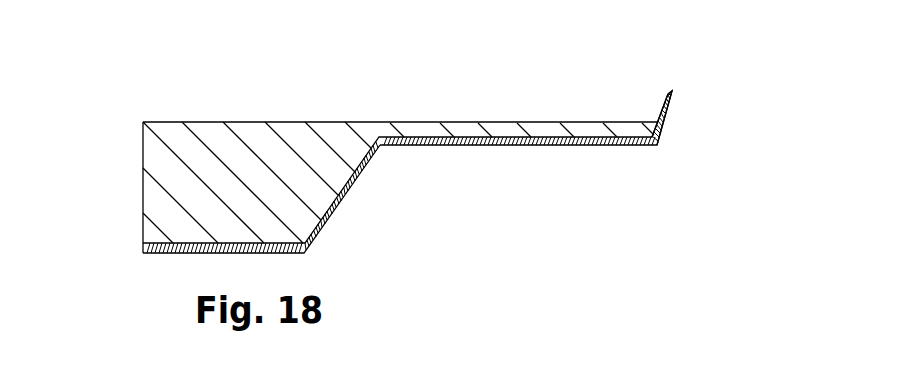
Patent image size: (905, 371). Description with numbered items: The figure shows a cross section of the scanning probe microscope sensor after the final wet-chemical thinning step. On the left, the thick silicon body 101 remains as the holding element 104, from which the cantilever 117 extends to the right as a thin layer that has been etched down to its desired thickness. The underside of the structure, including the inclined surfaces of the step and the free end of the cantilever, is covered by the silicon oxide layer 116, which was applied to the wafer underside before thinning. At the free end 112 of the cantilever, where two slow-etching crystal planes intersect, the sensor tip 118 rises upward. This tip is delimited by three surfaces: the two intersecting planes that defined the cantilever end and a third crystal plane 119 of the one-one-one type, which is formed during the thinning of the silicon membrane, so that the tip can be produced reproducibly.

The component body 101 is at (148, 174).
The holding element 104 is at (143, 212).
The silicon oxide layer 116 is at (148, 255).
The end of the cantilever 112 is at (670, 116).
The cantilever 117 is at (473, 127).
The (111)-crystal plane 119 is at (657, 117).
The sensor tip 118 is at (672, 91).